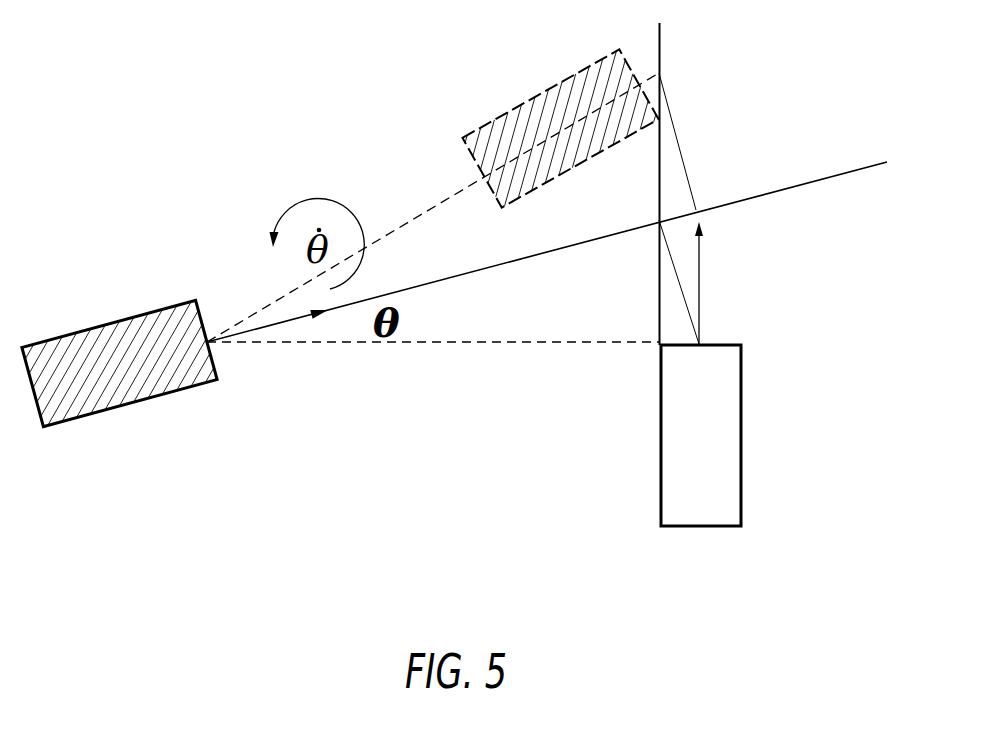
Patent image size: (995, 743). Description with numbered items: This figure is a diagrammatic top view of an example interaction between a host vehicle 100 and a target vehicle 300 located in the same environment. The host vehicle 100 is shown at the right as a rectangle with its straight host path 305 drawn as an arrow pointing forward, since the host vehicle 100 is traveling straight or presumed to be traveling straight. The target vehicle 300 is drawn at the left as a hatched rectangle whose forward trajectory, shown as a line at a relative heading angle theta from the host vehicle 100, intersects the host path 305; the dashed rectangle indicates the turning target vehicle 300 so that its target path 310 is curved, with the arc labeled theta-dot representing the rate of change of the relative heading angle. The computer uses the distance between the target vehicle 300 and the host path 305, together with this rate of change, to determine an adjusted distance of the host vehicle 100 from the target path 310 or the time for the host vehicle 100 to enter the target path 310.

The host vehicle 100 is at (742, 397).
The target vehicle 300 is at (97, 413).
The host path 305 is at (698, 280).
The target path 310 is at (523, 258).